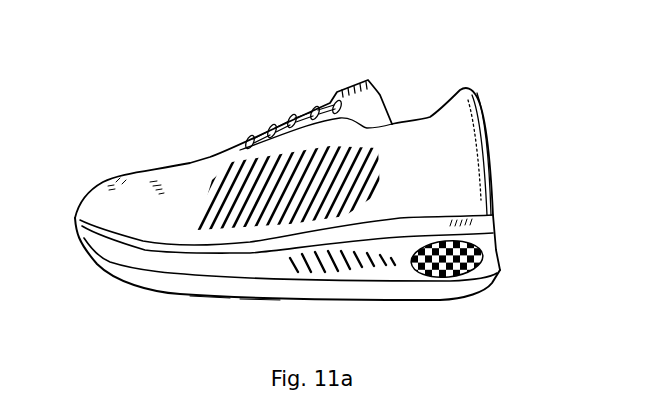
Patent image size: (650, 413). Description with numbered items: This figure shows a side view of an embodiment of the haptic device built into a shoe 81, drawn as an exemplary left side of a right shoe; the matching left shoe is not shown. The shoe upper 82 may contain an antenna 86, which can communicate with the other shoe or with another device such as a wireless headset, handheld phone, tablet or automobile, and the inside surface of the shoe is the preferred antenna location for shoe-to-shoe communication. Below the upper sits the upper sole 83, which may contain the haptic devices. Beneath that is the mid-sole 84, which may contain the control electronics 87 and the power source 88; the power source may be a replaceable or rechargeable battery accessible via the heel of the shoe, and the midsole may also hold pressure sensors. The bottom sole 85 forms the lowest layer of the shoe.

The shoe 81 is at (328, 147).
The shoe upper 82 is at (462, 138).
The upper sole 83 is at (492, 222).
The mid-sole 84 is at (148, 260).
The bottom sole 85 is at (193, 300).
The antenna 86 is at (233, 142).
The control electronics 87 is at (330, 262).
The power source 88 is at (478, 300).